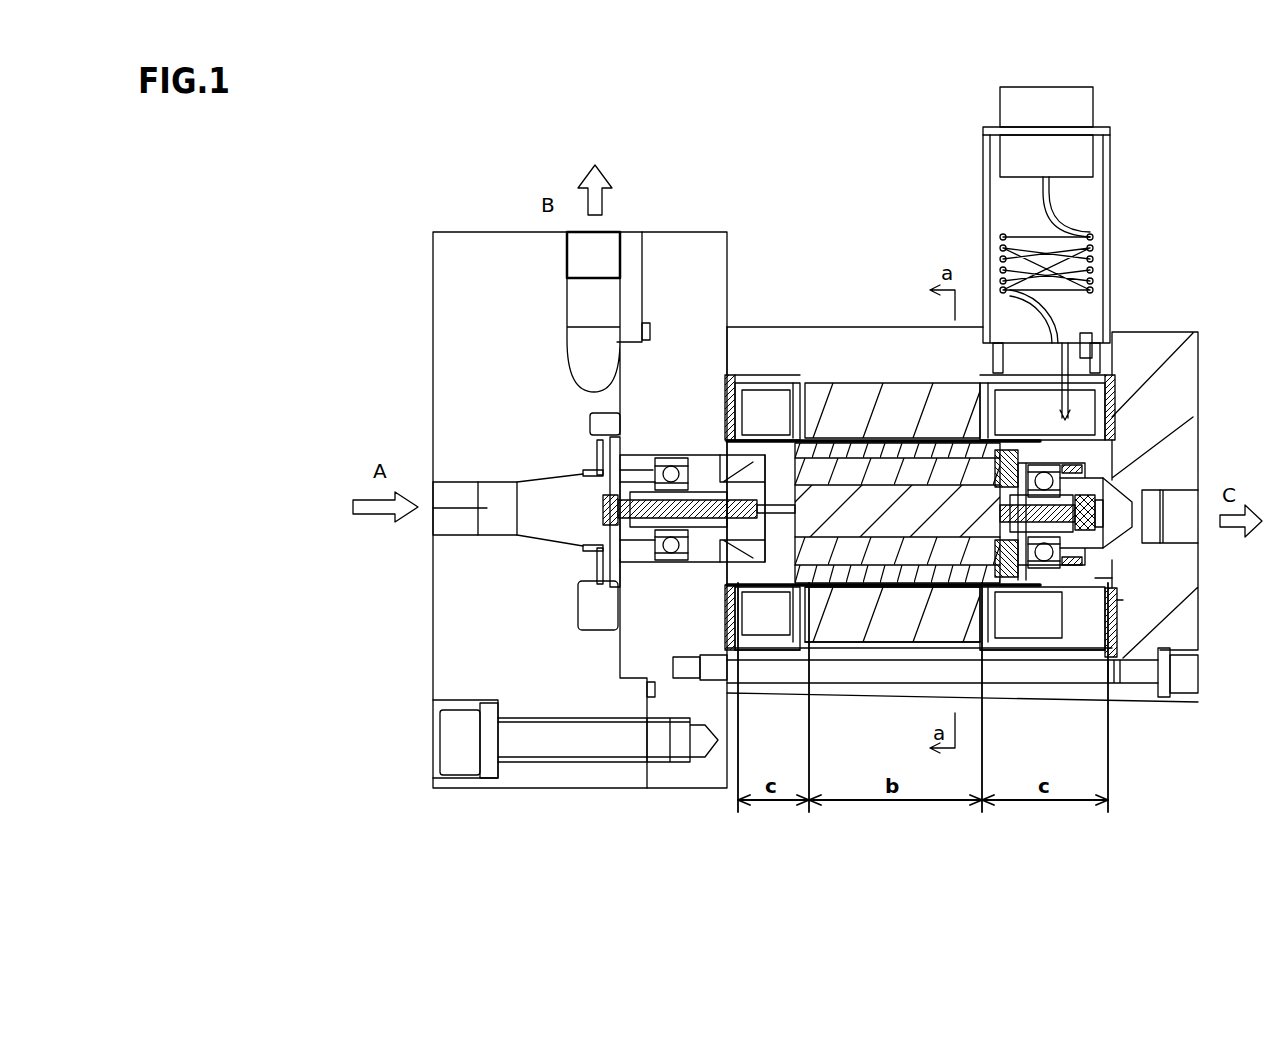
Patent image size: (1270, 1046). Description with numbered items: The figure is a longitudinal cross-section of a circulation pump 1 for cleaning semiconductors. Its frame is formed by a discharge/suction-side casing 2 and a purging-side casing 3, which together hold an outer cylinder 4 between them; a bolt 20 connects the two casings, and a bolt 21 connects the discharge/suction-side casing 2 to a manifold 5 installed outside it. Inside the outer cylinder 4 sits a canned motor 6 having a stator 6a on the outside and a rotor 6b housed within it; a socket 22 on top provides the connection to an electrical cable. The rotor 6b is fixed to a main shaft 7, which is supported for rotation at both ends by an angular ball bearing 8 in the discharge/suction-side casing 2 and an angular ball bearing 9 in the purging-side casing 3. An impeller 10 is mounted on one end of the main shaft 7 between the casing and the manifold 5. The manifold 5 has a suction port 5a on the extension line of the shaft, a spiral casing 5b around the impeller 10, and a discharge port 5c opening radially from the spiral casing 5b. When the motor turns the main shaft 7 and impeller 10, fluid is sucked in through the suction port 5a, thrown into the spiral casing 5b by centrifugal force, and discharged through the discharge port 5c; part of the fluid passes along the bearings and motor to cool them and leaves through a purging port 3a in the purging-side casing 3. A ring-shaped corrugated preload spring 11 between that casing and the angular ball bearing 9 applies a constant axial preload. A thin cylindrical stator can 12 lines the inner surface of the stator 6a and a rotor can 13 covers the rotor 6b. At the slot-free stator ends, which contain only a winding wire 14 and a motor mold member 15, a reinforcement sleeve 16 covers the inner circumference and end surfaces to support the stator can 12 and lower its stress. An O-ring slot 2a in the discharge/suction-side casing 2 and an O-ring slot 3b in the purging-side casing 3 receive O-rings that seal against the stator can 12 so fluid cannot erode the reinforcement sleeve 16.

The circulation pump 1 is at (761, 279).
The discharge/suction-side casing 2 is at (713, 248).
The O-ring slot 2a is at (615, 586).
The purging-side casing 3 is at (1152, 350).
The purging port 3a is at (1190, 535).
The O-ring slot 3b is at (1097, 582).
The outer cylinder 4 is at (826, 355).
The manifold 5 is at (453, 690).
The suction port 5a is at (433, 525).
The spiral casing 5b is at (597, 428).
The discharge port 5c is at (605, 245).
The canned motor 6 is at (895, 380).
The stator 6a is at (897, 633).
The rotor 6b is at (845, 560).
The main shaft 7 is at (775, 455).
The angular ball bearing 8 is at (678, 455).
The angular ball bearing 9 is at (1104, 480).
The impeller 10 is at (583, 537).
The preload spring 11 is at (1082, 466).
The stator can 12 is at (1117, 600).
The rotor can 13 is at (858, 433).
The winding wire 14 is at (755, 620).
The motor mold member 15 is at (778, 650).
The reinforcement sleeve 16 is at (730, 400).
The bolt 20 is at (1140, 680).
The bolt 21 is at (578, 747).
The socket 22 is at (1092, 103).